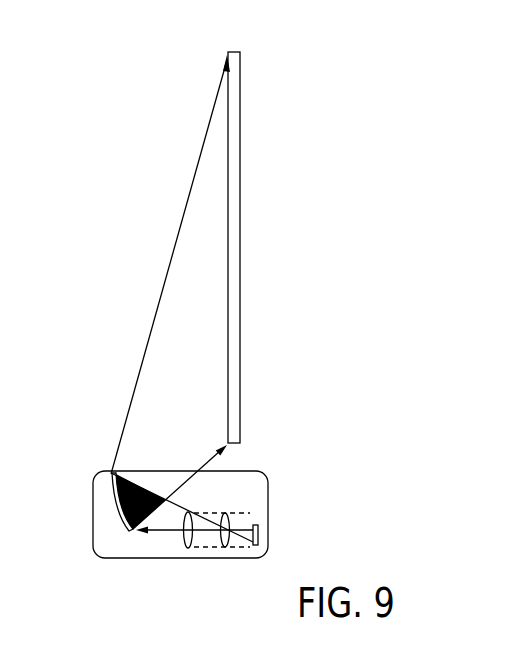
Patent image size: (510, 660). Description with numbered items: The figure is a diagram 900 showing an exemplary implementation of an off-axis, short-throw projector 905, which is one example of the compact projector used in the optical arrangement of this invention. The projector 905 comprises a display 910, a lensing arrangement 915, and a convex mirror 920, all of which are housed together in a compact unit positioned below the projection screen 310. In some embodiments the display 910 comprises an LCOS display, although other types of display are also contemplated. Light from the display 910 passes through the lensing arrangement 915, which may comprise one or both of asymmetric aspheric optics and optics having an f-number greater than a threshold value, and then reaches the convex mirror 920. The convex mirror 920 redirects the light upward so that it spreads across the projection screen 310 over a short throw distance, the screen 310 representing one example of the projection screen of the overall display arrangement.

The diagram 900 is at (352, 76).
The projection screen 310 is at (242, 257).
The projector 905 is at (274, 486).
The convex mirror 920 is at (124, 511).
The lensing arrangement 915 is at (207, 543).
The display 910 is at (258, 535).